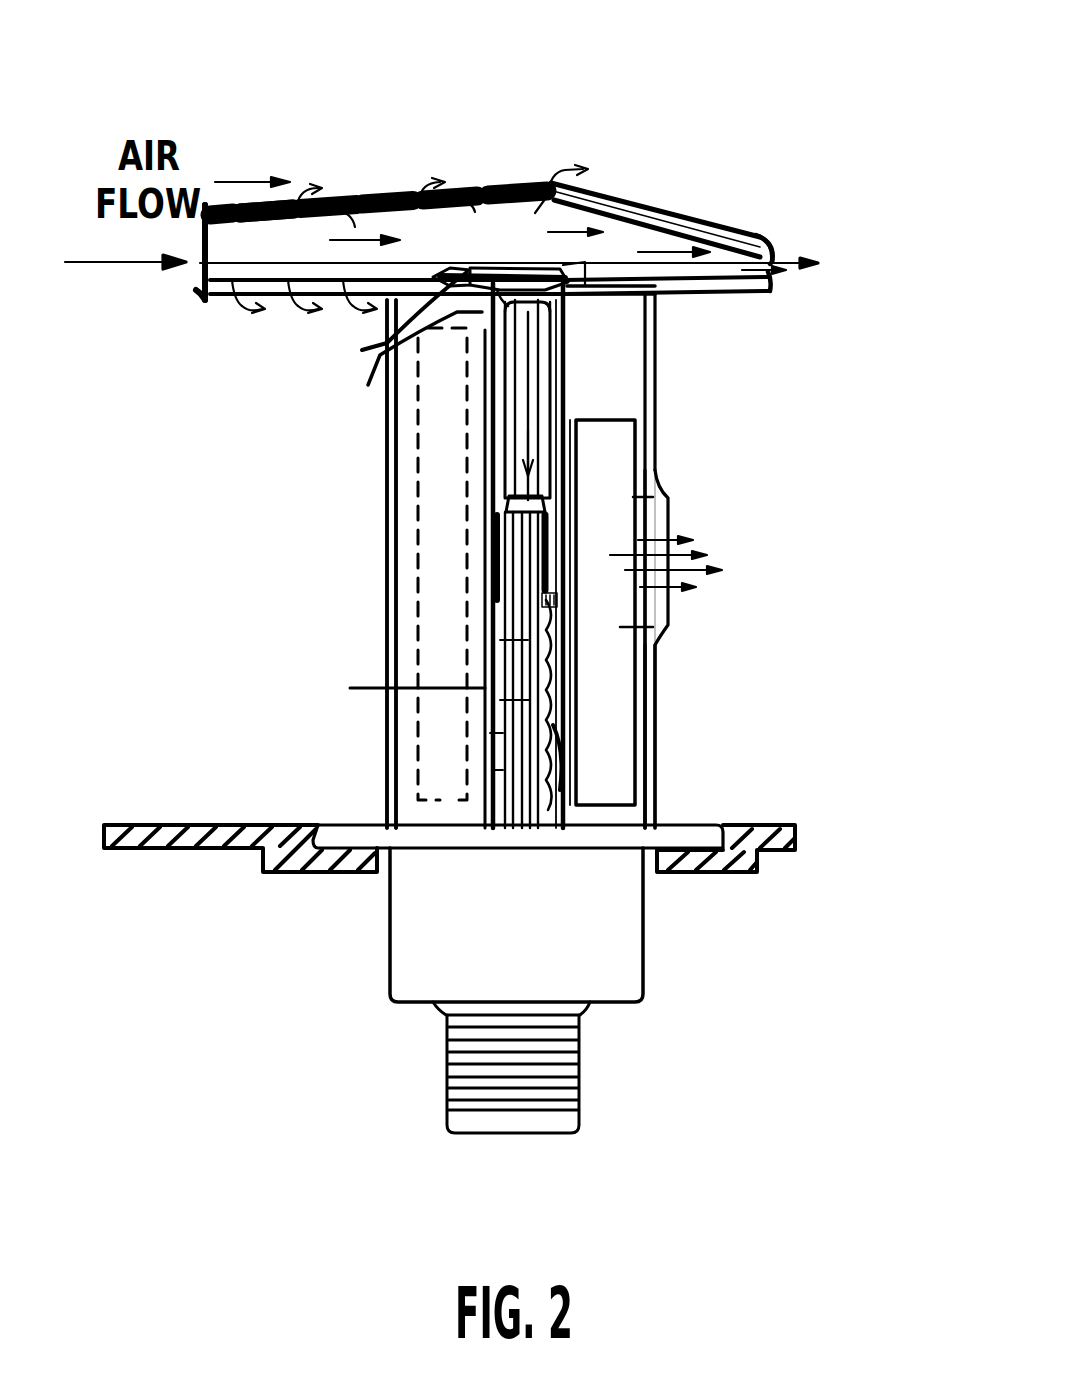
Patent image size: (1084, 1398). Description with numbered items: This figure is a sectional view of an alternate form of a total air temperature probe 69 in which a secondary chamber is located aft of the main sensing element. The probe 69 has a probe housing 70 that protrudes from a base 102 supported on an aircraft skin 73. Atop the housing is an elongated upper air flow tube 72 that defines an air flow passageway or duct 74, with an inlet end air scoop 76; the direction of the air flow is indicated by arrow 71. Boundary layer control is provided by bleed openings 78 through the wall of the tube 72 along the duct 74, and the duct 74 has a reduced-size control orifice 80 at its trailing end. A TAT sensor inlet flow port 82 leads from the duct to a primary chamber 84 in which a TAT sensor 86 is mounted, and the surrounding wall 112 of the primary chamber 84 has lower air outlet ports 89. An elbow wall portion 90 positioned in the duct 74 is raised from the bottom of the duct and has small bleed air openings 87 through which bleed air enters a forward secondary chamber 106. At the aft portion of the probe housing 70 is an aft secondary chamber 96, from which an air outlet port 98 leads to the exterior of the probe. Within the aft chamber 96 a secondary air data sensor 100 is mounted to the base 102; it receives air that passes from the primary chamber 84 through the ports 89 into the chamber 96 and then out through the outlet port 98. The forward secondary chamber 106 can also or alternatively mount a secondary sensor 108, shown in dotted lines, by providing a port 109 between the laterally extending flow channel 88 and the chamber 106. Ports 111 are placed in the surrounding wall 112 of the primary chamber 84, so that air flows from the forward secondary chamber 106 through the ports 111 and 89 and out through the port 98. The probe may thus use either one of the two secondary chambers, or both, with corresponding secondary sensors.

The TAT probe 69 is at (278, 88).
The probe housing 70 is at (653, 210).
The arrow 71 is at (110, 265).
The upper air flow tube 72 is at (390, 196).
The aircraft skin 73 is at (157, 850).
The air flow passageway or duct 74 is at (498, 285).
The inlet end air scoop 76 is at (203, 253).
The bleed openings 78 is at (355, 207).
The control orifice 80 is at (750, 247).
The TAT sensor inlet flow port 82 is at (570, 262).
The primary chamber 84 is at (560, 383).
The TAT sensor 86 is at (537, 413).
The bleed air openings 87 is at (452, 273).
The laterally extending flow channel 88 is at (394, 326).
The air outlet ports 89 is at (545, 760).
The elbow wall portion 90 is at (557, 275).
The aft secondary chamber 96 is at (637, 723).
The air outlet port 98 is at (662, 525).
The secondary air data sensor 100 is at (630, 773).
The base 102 is at (380, 846).
The forward secondary chamber 106 is at (410, 423).
The secondary sensor 108 is at (417, 543).
The port 109 is at (397, 359).
The ports 111 is at (483, 722).
The surrounding wall 112 is at (383, 689).